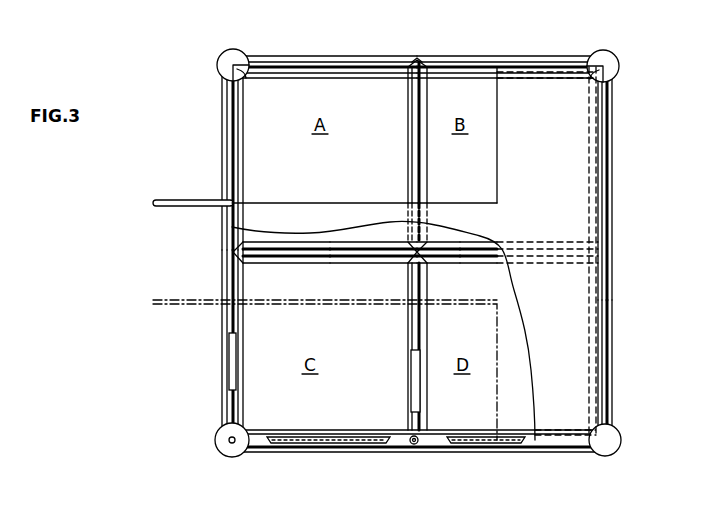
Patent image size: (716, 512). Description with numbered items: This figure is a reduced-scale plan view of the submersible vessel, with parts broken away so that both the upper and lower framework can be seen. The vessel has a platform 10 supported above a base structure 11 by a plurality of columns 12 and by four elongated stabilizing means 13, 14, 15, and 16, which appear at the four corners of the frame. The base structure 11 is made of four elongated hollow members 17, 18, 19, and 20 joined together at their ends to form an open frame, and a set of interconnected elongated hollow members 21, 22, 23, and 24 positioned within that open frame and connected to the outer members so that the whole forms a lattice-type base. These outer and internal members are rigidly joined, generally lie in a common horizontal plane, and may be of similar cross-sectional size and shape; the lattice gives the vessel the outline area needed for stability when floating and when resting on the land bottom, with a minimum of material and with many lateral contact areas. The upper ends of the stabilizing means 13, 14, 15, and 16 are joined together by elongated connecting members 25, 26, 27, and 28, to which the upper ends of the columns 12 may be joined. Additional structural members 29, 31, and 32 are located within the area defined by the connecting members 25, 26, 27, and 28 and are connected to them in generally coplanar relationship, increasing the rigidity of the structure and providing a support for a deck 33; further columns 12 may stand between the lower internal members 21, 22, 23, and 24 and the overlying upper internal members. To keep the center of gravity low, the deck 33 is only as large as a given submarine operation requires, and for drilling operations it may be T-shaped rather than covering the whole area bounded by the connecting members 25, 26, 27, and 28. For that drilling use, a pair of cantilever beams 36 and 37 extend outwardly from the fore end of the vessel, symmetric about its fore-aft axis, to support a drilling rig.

The platform 10 is at (563, 228).
The base structure 11 is at (420, 58).
The columns 12 is at (430, 66).
The stabilizing means 13 is at (215, 440).
The stabilizing means 14 is at (220, 63).
The stabilizing means 15 is at (618, 70).
The stabilizing means 16 is at (621, 440).
The elongated hollow member 17 is at (230, 388).
The elongated hollow member 18 is at (530, 56).
The elongated hollow member 19 is at (612, 341).
The elongated hollow member 20 is at (410, 447).
The internal elongated hollow member 21 is at (320, 264).
The internal elongated hollow member 22 is at (408, 140).
The internal elongated hollow member 23 is at (500, 264).
The internal elongated hollow member 24 is at (411, 372).
The elongated connecting member 25 is at (231, 343).
The elongated connecting member 26 is at (322, 56).
The elongated connecting member 27 is at (612, 292).
The elongated connecting member 28 is at (320, 452).
The additional structural member 29 is at (378, 264).
The additional structural member 31 is at (455, 264).
The additional structural member 32 is at (420, 396).
The deck 33 is at (562, 179).
The cantilever beam 36 is at (160, 200).
The cantilever beam 37 is at (153, 306).